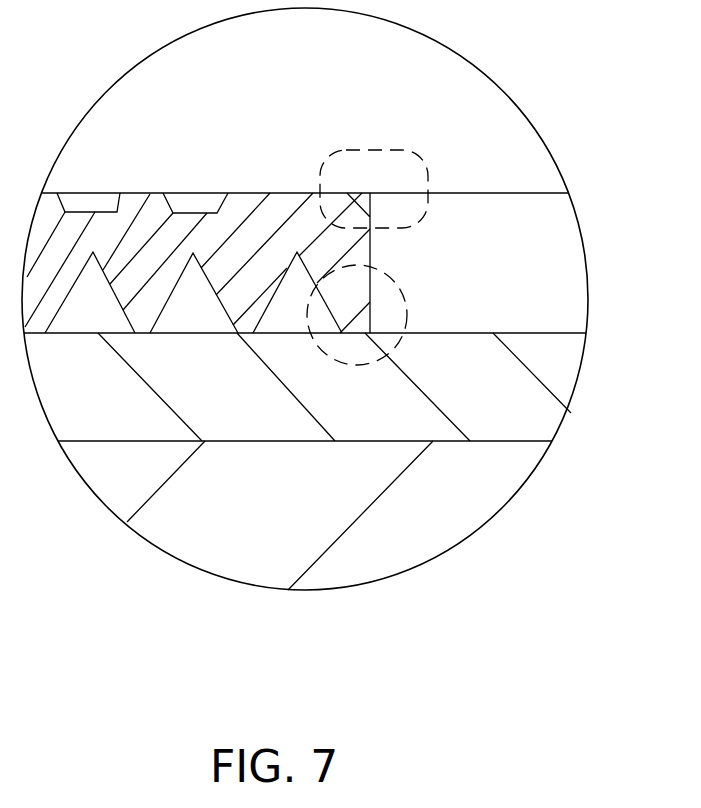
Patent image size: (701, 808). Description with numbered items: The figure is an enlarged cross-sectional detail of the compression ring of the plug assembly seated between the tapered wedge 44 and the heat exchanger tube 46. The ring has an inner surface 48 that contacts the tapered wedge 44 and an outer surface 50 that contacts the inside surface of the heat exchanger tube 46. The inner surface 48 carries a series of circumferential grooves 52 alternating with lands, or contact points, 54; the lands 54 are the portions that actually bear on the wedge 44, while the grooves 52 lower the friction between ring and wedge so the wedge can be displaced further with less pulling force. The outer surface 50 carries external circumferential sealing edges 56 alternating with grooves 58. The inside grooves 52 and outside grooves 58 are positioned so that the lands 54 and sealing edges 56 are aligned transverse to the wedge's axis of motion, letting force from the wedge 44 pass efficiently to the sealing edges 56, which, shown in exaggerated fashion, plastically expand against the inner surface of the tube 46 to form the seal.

The tapered wedge 44 is at (421, 98).
The heat exchanger tube 46 is at (572, 365).
The inner surface 48 is at (308, 193).
The outer surface 50 is at (347, 362).
The grooves 52 is at (98, 193).
The lands 54 is at (145, 193).
The sealing edges 56 is at (35, 335).
The grooves 58 is at (193, 292).